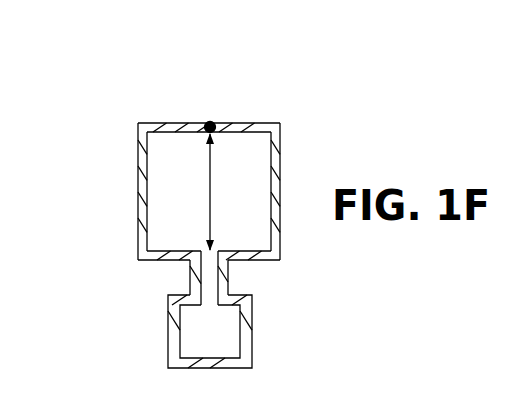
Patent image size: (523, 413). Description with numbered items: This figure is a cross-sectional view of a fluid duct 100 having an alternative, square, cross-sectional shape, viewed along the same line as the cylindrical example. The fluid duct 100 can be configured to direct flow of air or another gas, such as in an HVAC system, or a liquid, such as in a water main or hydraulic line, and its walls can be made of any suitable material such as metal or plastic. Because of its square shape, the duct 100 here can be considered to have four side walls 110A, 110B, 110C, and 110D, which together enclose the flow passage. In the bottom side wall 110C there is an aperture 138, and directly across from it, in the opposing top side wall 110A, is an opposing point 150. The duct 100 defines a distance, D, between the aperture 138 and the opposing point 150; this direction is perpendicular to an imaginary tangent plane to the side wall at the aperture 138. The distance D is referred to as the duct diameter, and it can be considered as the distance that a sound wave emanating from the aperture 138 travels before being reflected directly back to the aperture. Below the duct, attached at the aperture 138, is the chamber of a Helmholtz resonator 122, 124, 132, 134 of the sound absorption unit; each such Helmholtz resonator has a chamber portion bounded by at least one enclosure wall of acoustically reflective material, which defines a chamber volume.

The fluid duct 100 is at (142, 93).
The side wall 110A is at (265, 118).
The side wall 110B is at (283, 150).
The side wall 110C is at (270, 261).
The side wall 110D is at (138, 162).
The opposing point 150 is at (218, 113).
The aperture 138 is at (208, 262).
The Helmholtz resonator 122 is at (151, 307).
The Helmholtz resonator 124 is at (151, 307).
The Helmholtz resonator 132 is at (151, 307).
The Helmholtz resonator 134 is at (162, 334).